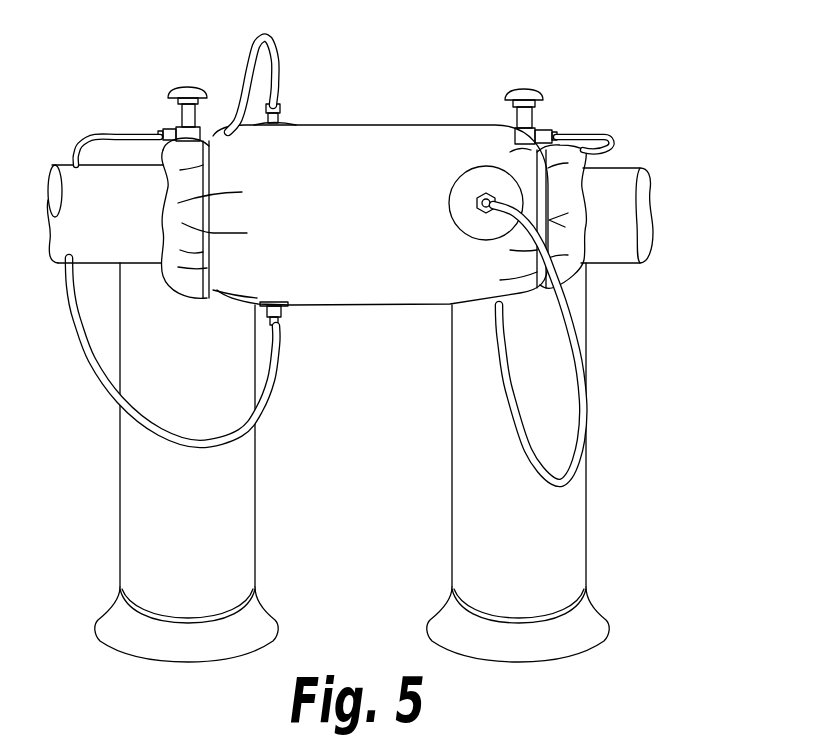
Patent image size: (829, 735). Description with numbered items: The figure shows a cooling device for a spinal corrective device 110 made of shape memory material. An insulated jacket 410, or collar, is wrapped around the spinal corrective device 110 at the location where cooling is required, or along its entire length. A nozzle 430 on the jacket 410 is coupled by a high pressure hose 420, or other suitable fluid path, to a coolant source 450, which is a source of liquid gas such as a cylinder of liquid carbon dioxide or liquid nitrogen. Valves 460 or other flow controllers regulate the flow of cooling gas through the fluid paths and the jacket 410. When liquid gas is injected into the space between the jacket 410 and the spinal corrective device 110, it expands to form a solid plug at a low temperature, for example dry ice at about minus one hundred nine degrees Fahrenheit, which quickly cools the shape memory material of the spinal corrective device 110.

The spinal corrective device 110 is at (624, 178).
The jacket 410 is at (362, 132).
The high pressure hose 420 is at (250, 68).
The nozzle 430 is at (290, 108).
The coolant source 450 is at (235, 452).
The valves 460 is at (185, 87).